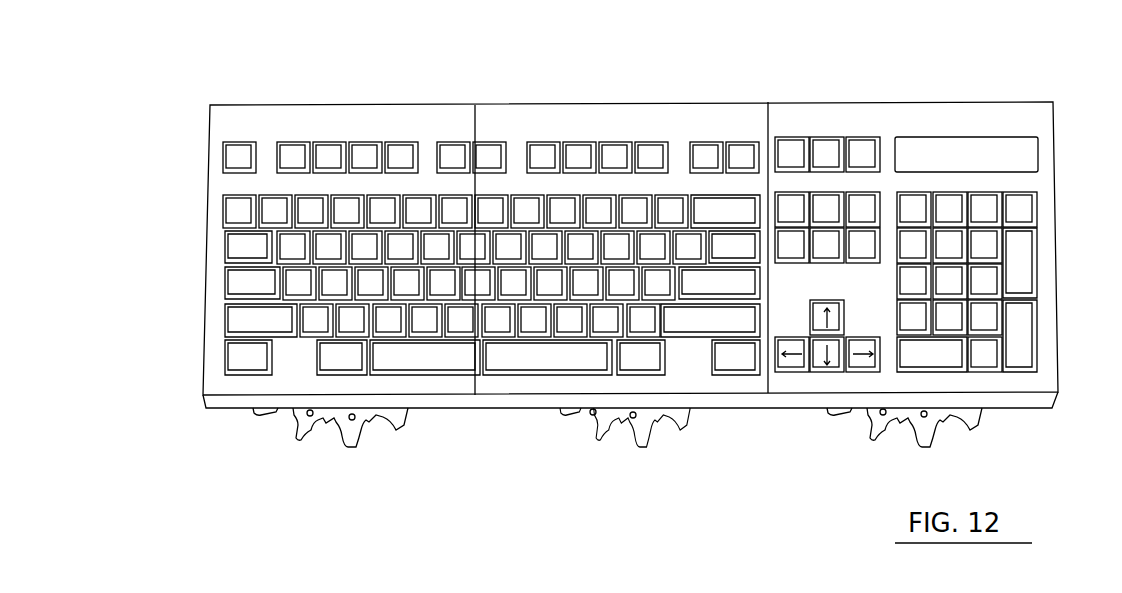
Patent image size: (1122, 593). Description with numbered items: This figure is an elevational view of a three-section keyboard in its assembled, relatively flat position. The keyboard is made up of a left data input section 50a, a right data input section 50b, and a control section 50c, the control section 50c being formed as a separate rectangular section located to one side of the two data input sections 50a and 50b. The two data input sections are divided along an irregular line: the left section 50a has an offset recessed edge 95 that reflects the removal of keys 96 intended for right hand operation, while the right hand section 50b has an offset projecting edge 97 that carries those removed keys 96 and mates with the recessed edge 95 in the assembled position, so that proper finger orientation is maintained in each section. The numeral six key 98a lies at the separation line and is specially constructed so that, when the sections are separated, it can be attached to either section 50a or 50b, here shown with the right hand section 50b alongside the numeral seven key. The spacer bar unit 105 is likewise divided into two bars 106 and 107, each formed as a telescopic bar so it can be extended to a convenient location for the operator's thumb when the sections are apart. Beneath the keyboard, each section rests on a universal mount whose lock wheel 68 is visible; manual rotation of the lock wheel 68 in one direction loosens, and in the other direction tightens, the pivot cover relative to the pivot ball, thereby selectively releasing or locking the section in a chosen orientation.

The left data input keyboard section 50a is at (462, 288).
The right data input keyboard section 50b is at (632, 302).
The control section 50c is at (930, 204).
The offset recessed edge 95 is at (523, 217).
The removed keys 96 is at (505, 409).
The offset projecting edge 97 is at (530, 165).
The numeral 6 key 98a is at (407, 151).
The spacer bar unit 105 is at (517, 438).
The spacer bar 106 is at (406, 420).
The spacer bar 107 is at (592, 438).
The lock wheel 68 is at (602, 454).